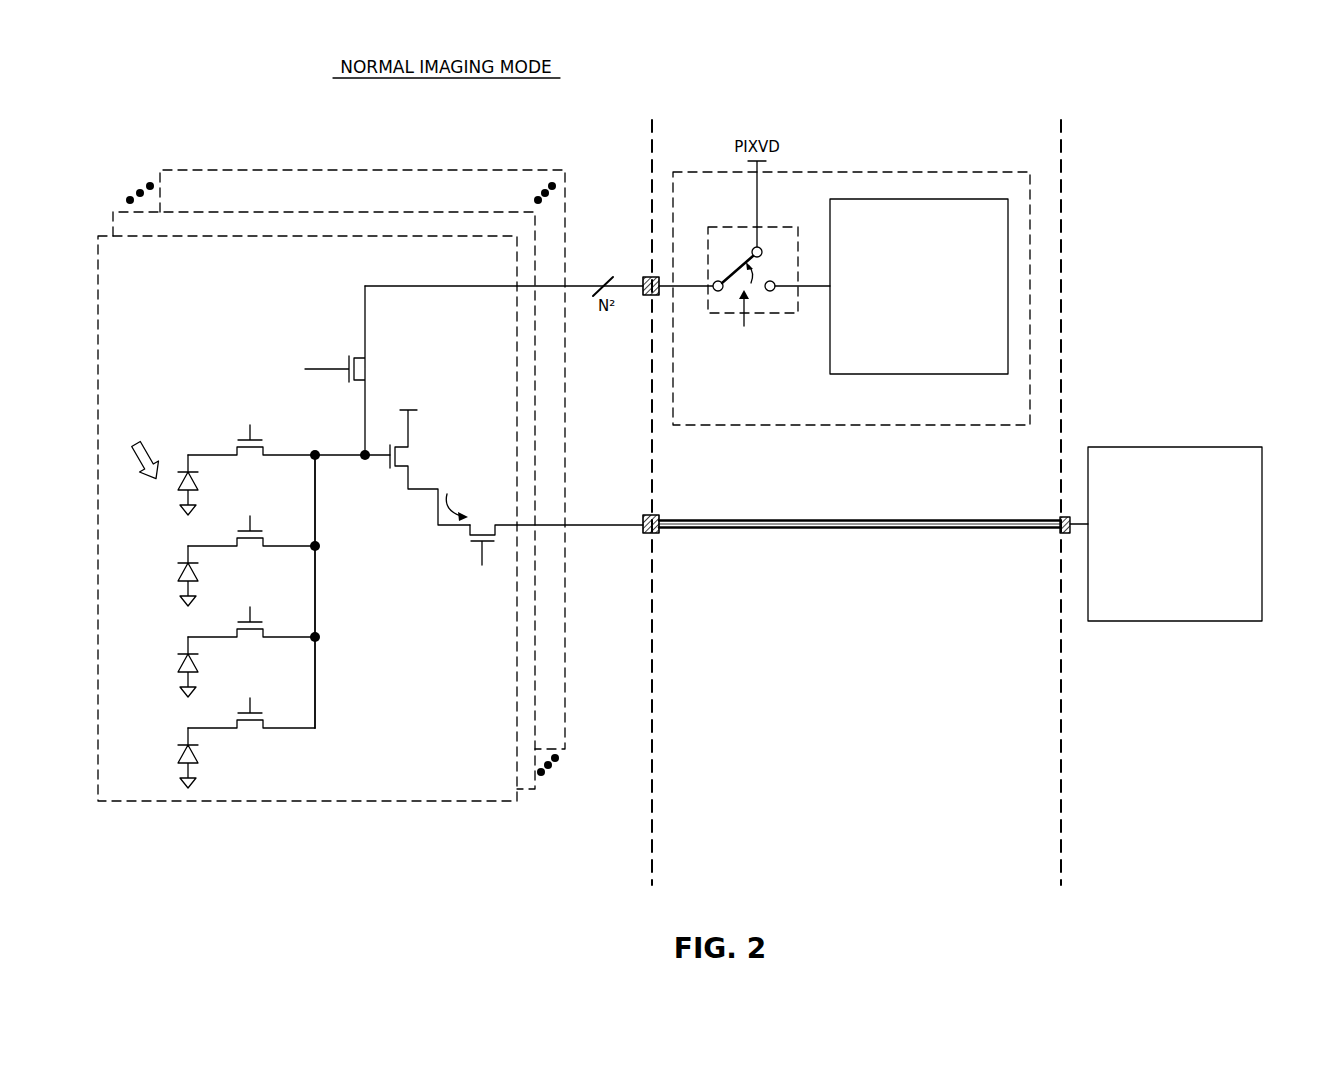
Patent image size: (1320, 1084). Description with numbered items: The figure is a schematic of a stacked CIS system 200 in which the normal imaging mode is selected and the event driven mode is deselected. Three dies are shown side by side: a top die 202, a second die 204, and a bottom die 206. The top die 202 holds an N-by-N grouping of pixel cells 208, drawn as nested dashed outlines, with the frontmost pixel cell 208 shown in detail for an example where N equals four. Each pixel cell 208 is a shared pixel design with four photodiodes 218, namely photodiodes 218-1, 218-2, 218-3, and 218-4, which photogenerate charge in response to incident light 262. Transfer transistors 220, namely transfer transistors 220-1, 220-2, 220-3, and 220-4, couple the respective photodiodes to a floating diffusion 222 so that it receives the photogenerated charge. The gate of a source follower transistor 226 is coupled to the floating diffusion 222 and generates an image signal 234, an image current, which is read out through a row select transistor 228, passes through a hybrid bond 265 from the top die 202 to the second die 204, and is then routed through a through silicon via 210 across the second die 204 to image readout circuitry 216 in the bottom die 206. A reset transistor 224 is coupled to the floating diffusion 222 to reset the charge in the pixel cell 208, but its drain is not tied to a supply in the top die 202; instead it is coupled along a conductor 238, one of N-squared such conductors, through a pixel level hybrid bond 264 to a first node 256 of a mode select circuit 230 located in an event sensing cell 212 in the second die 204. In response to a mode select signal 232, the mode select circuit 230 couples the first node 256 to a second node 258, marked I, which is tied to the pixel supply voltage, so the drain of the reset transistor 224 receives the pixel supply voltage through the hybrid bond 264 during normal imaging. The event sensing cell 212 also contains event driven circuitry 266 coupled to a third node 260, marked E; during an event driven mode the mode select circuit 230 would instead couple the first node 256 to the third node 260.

The stacked CIS system 200 is at (1226, 58).
The top die 202 is at (372, 863).
The second die 204 is at (765, 863).
The bottom die 206 is at (1136, 867).
The pixel cell 208 is at (372, 502).
The TSV 210 is at (826, 528).
The event sensing cell 212 is at (798, 478).
The image readout circuitry 216 is at (1263, 449).
The photodiodes 218 is at (176, 621).
The first photodiode 218-1 is at (174, 472).
The second photodiode 218-2 is at (174, 563).
The third photodiode 218-3 is at (174, 654).
The fourth photodiode 218-4 is at (174, 745).
The transfer transistors 220 is at (251, 578).
The first transfer transistor 220-1 is at (261, 473).
The second transfer transistor 220-2 is at (261, 564).
The third transfer transistor 220-3 is at (261, 655).
The fourth transfer transistor 220-4 is at (261, 746).
The floating diffusion 222 is at (359, 452).
The reset transistor 224 is at (345, 370).
The source follower transistor 226 is at (404, 468).
The row select transistor 228 is at (463, 537).
The mode select circuit 230 is at (740, 224).
The mode select signal 232 is at (741, 390).
The image signal 234 is at (478, 478).
The conductor 238 is at (480, 286).
The first node 256 is at (715, 284).
The second node 258 is at (753, 250).
The third node 260 is at (780, 291).
The incident light 262 is at (136, 396).
The hybrid bond 264 is at (634, 320).
The hybrid bond 265 is at (634, 558).
The event driven circuitry 266 is at (905, 377).